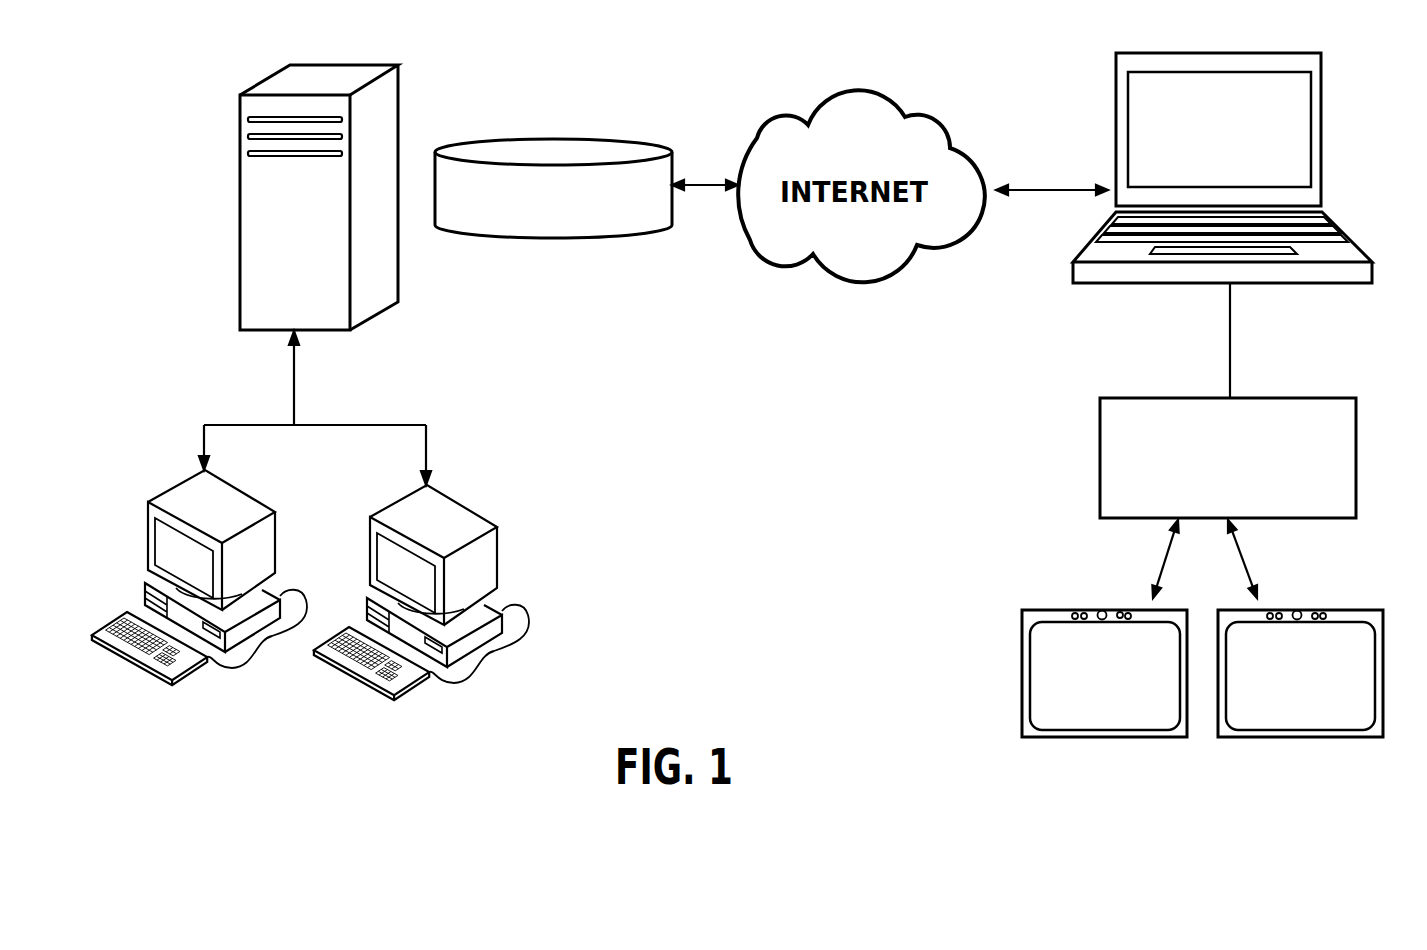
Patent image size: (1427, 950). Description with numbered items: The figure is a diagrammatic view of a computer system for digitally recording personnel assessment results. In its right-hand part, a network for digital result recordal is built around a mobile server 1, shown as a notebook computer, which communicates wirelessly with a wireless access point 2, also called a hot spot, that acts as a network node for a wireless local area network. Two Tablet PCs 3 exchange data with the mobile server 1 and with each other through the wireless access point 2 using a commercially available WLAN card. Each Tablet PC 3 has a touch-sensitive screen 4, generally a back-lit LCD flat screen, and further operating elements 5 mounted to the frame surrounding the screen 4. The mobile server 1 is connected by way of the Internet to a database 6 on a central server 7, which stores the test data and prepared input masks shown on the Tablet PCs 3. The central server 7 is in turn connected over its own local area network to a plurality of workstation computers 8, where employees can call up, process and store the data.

The mobile server 1 is at (1355, 238).
The wireless access point 2 is at (1253, 398).
The Tablet PC 3 is at (1080, 737).
The touch-sensitive screen 4 is at (1067, 670).
The operating elements 5 is at (1116, 599).
The database 6 is at (557, 150).
The central server 7 is at (373, 150).
The workstation computer 8 is at (287, 568).